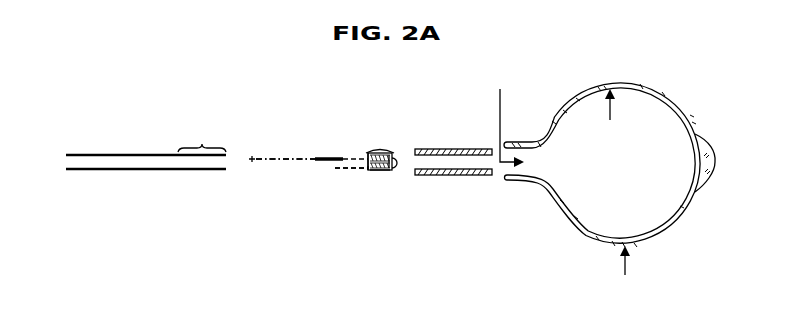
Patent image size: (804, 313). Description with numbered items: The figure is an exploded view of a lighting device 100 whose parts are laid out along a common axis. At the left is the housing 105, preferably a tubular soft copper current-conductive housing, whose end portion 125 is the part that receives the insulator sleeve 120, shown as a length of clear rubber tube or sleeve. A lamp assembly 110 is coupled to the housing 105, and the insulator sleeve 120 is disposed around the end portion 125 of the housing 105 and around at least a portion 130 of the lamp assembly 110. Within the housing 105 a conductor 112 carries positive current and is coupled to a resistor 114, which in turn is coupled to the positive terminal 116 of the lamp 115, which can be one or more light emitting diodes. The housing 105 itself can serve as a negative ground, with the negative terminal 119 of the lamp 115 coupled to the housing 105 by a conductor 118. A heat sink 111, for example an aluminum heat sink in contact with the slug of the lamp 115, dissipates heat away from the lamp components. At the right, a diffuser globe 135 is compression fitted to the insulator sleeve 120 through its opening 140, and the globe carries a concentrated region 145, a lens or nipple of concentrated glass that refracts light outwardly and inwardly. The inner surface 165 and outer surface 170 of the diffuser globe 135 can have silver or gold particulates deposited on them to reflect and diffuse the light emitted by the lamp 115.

The lighting device 100 is at (234, 101).
The housing 105 is at (99, 171).
The end portion of the housing 125 is at (202, 135).
The conductor 112 is at (281, 158).
The resistor 114 is at (329, 157).
The positive terminal 116 is at (368, 156).
The lamp assembly 110 is at (401, 181).
The portion of the lamp assembly 130 is at (383, 147).
The lamp 115 is at (399, 159).
The insulator sleeve 120 is at (458, 150).
The conductor 118 is at (342, 171).
The negative terminal 119 is at (368, 171).
The heat sink 111 is at (382, 172).
The opening 140 is at (504, 118).
The diffuser globe 135 is at (652, 90).
The concentrated region 145 is at (717, 156).
The inner surface 165 is at (611, 115).
The outer surface 170 is at (628, 271).